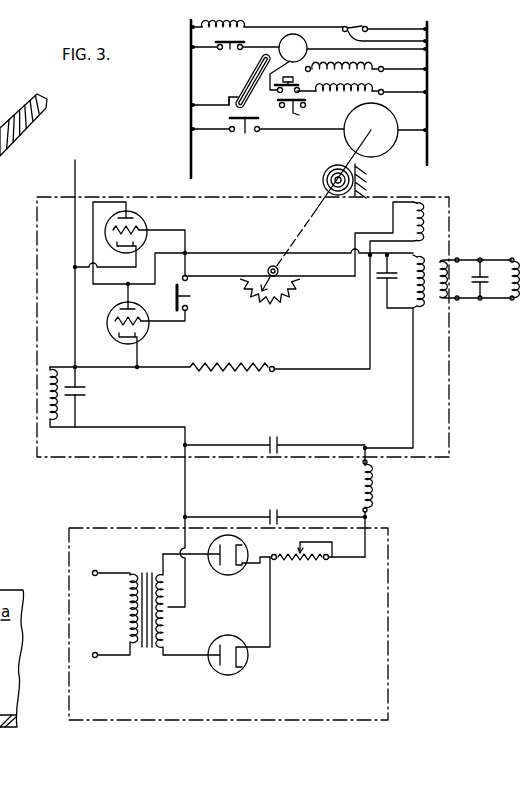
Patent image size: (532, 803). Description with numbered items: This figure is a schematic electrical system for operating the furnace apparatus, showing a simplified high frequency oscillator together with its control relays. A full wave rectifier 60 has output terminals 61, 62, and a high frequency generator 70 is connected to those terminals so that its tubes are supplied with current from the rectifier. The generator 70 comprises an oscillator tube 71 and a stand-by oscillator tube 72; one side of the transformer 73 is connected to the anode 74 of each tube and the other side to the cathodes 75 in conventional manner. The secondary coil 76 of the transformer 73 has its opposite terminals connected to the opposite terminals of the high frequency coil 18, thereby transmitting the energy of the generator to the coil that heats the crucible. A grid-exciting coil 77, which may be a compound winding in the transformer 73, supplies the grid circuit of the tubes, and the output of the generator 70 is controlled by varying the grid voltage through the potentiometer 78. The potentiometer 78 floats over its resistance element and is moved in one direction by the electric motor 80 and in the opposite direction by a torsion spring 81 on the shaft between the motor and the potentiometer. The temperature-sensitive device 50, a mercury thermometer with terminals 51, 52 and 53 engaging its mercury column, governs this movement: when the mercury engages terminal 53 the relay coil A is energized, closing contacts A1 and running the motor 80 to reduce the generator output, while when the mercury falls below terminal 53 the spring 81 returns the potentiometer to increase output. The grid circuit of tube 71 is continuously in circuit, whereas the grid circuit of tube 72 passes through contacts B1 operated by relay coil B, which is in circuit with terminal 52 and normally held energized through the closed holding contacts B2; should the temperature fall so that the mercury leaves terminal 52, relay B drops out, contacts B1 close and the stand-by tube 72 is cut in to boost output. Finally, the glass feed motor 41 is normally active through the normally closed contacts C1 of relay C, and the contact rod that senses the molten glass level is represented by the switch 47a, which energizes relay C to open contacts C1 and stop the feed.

The switch 47a is at (427, 41).
The relay C is at (247, 27).
The normally closed contacts C1 is at (218, 44).
The terminal 53 is at (293, 48).
The electric motor 41 is at (306, 42).
The terminal 52 is at (256, 70).
The temperature-sensitive device 50 is at (243, 83).
The terminal 51 is at (219, 109).
The relay coil A is at (383, 66).
The relay coil B is at (381, 89).
The holding circuit contacts B2 is at (302, 115).
The contacts A1 is at (253, 133).
The electric motor 80 is at (397, 117).
The torsion spring 81 is at (324, 173).
The grid-exciting coil 77 is at (424, 197).
The anode 74 is at (129, 216).
The oscillator tube 71 is at (147, 224).
The cathode 75 is at (139, 256).
The stand-by oscillator tube 72 is at (107, 315).
The potentiometer 78 is at (266, 272).
The secondary coil 76 is at (452, 258).
The high frequency coil 18 is at (509, 261).
The transformer 73 is at (428, 312).
The high frequency generator 70 is at (477, 430).
The output terminal 61 is at (188, 517).
The output terminal 62 is at (367, 510).
The full wave rectifier 60 is at (425, 540).
The contacts B1 is at (188, 309).